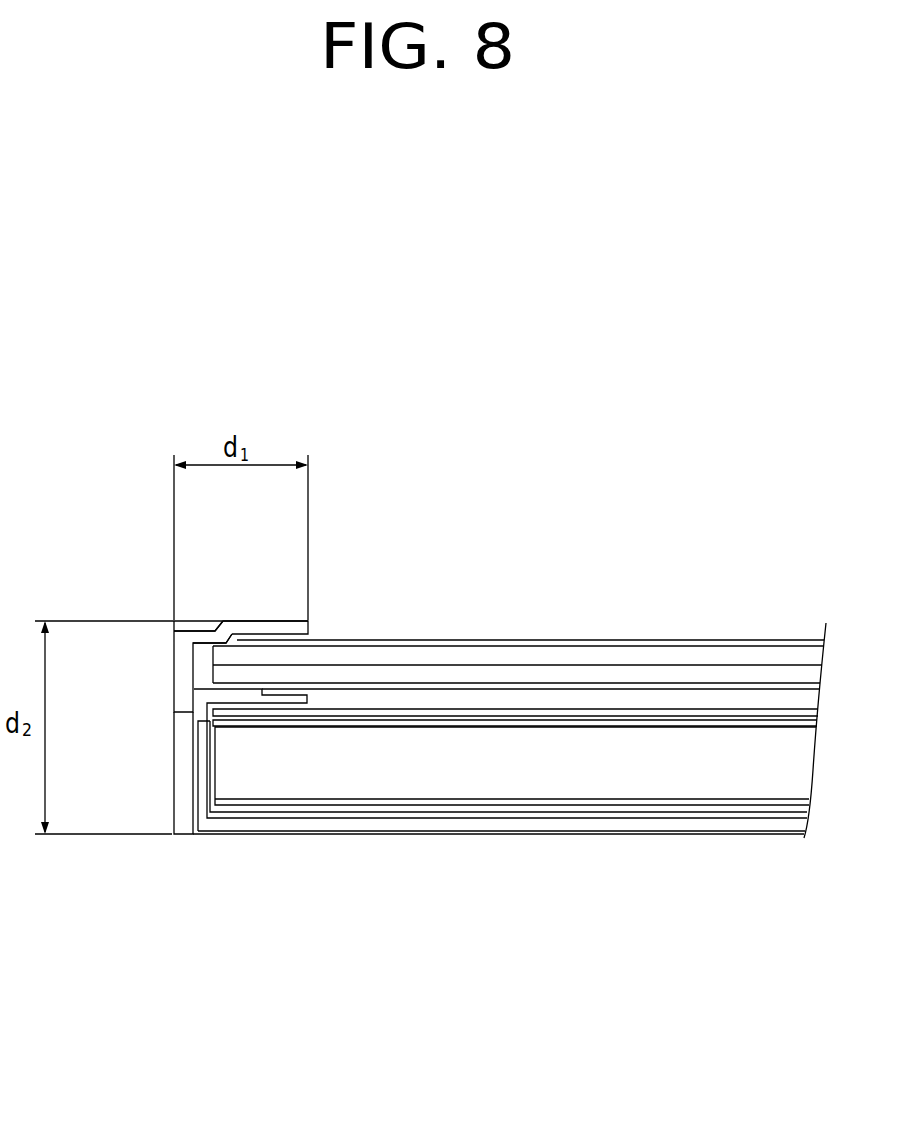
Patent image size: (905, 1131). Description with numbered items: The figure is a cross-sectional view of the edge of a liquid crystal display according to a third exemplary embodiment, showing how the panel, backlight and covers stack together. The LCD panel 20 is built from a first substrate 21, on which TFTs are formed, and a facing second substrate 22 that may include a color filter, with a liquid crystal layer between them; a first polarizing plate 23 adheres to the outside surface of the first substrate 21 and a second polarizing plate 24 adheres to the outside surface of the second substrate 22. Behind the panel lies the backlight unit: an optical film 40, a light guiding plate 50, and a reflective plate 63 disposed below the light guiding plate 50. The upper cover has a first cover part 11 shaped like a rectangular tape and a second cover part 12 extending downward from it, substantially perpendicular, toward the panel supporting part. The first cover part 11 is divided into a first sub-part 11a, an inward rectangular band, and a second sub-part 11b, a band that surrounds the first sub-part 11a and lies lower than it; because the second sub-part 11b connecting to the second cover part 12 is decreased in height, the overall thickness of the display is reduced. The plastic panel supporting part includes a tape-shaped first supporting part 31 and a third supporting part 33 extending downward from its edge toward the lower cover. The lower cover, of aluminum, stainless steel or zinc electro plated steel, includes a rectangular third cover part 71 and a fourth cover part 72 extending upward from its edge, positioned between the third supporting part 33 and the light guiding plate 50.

The first cover part 11 is at (241, 568).
The first sub-part 11a is at (273, 625).
The second sub-part 11b is at (199, 631).
The second cover part 12 is at (173, 660).
The LCD panel 20 is at (790, 542).
The first substrate 21 is at (664, 672).
The second substrate 22 is at (730, 660).
The first polarizing plate 23 is at (784, 690).
The second polarizing plate 24 is at (603, 640).
The first supporting part 31 is at (238, 692).
The third supporting part 33 is at (176, 796).
The optical film 40 is at (490, 708).
The light guiding plate 50 is at (378, 780).
The reflective plate 63 is at (565, 813).
The third cover part 71 is at (468, 832).
The fourth cover part 72 is at (197, 755).